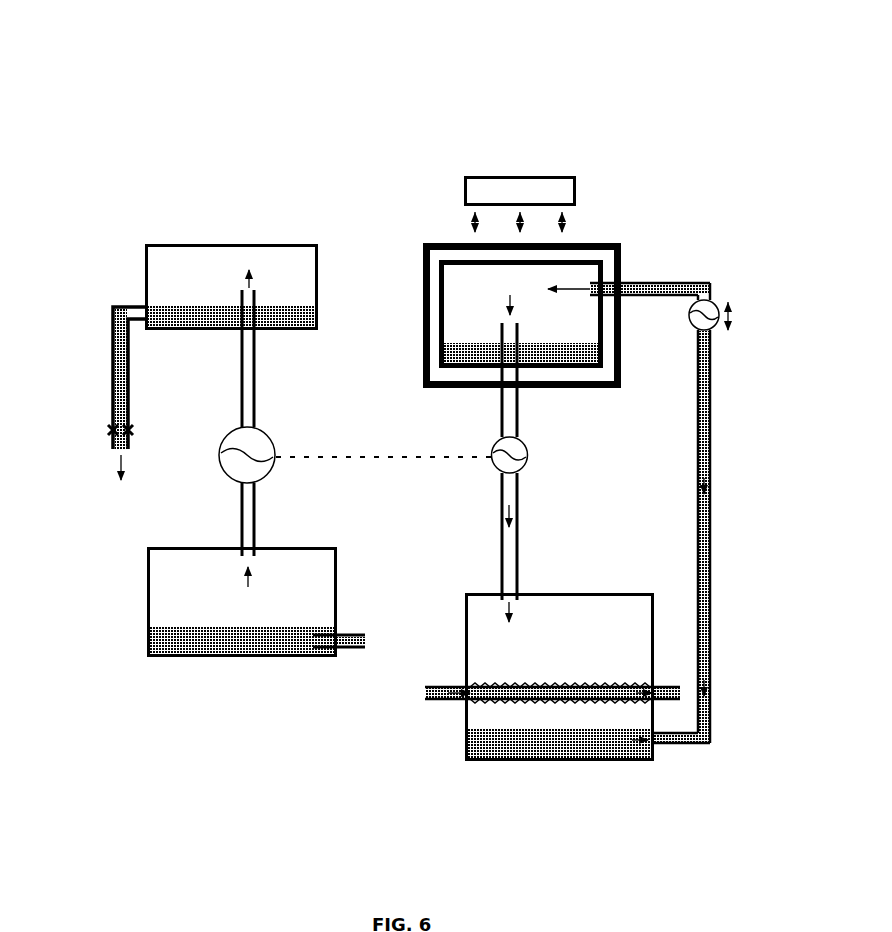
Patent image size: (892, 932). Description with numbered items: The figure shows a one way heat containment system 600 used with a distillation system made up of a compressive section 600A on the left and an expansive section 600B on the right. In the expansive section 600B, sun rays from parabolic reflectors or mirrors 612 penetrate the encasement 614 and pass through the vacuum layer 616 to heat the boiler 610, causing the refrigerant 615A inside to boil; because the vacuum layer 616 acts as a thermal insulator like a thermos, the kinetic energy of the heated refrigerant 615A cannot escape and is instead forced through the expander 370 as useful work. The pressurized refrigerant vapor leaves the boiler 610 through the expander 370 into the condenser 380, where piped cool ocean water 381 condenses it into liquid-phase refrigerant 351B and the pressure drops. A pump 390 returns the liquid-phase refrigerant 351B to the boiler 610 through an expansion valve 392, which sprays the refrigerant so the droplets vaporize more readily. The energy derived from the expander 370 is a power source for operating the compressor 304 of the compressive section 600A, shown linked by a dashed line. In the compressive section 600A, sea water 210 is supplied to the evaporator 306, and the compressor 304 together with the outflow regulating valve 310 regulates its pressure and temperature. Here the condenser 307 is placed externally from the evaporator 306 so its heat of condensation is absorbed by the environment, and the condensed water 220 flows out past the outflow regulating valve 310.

The compressive section 600A is at (299, 340).
The expansive section 600B is at (556, 399).
The condenser 307 is at (232, 287).
The outflow regulating valve 310 is at (168, 413).
The condensed water 220 is at (122, 479).
The compressor 304 is at (263, 440).
The evaporator 306 is at (242, 602).
The sea water 210 is at (361, 641).
The parabolic reflectors or mirrors 612 is at (520, 205).
The heat containment system 600 is at (419, 242).
The vacuum layer 616 is at (585, 257).
The refrigerant 615A is at (468, 323).
The boiler 610 is at (512, 446).
The expansion valve 392 is at (629, 286).
The pump 390 is at (688, 313).
The encasement 614 is at (442, 396).
The expander 370 is at (525, 449).
The condenser 380 is at (589, 545).
The piped cool ocean water 381 is at (669, 686).
The liquid-phase refrigerant 351B is at (483, 745).